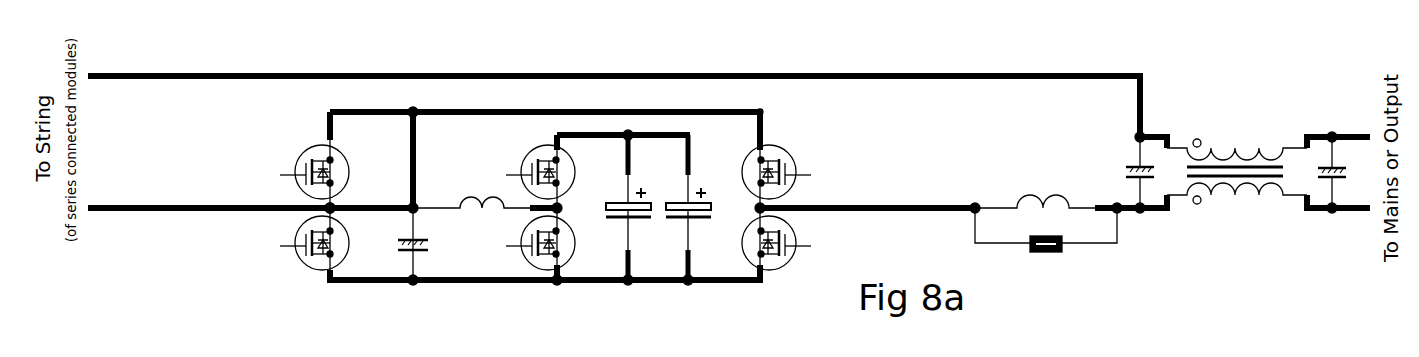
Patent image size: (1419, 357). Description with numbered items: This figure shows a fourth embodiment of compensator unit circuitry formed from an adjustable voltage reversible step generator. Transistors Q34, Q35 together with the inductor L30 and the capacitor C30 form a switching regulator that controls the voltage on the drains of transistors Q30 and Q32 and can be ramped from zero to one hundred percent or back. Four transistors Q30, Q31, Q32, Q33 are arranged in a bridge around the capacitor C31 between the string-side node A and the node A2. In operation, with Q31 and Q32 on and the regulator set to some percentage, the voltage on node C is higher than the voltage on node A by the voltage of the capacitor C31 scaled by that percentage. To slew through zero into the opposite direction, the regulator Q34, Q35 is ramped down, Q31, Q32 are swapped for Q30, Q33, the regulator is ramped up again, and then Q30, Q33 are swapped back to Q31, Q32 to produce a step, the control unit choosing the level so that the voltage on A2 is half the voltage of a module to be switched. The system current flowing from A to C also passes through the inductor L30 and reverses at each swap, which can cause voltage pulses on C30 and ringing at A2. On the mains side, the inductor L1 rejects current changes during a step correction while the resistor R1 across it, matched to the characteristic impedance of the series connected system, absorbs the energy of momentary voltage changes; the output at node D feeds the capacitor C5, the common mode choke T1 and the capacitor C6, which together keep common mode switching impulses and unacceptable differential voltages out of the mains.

The switching transistor Q30 is at (310, 161).
The switching transistor Q31 is at (310, 255).
The switching transistor Q32 is at (789, 169).
The switching transistor Q33 is at (789, 243).
The switching regulator transistor Q34 is at (524, 172).
The switching regulator transistor Q35 is at (558, 248).
The capacitor C30 is at (397, 231).
The inductor L30 is at (471, 217).
The capacitor C31 is at (658, 207).
The inductor L1 is at (1057, 189).
The resistor R1 is at (1046, 244).
The capacitor C5 is at (1124, 171).
The common mode choke T1 is at (1255, 159).
The capacitor C6 is at (1332, 156).
The node A is at (225, 198).
The node A2 is at (777, 111).
The node C is at (946, 197).
The node D is at (1127, 223).